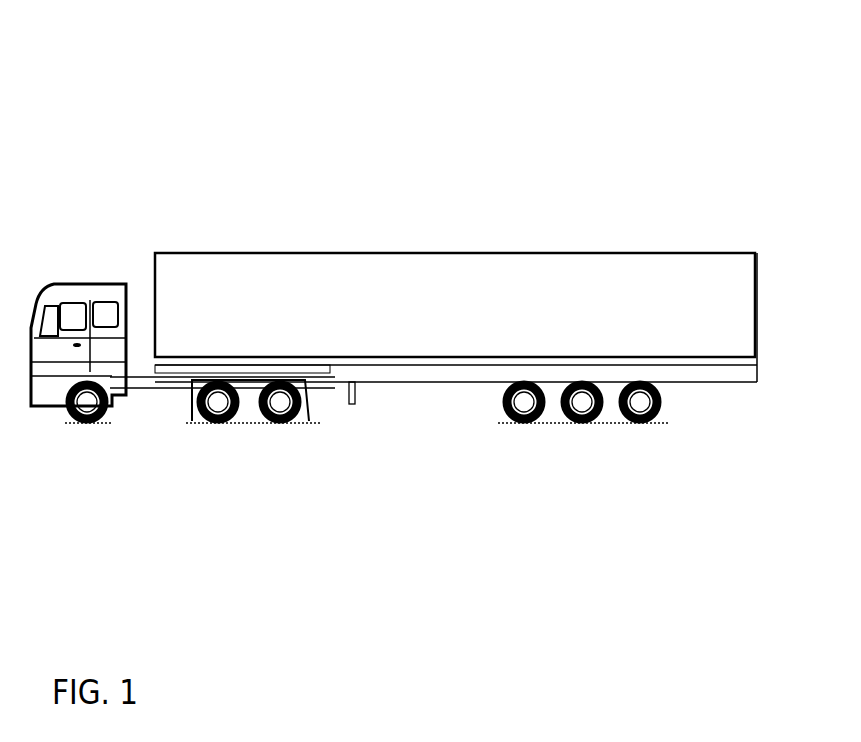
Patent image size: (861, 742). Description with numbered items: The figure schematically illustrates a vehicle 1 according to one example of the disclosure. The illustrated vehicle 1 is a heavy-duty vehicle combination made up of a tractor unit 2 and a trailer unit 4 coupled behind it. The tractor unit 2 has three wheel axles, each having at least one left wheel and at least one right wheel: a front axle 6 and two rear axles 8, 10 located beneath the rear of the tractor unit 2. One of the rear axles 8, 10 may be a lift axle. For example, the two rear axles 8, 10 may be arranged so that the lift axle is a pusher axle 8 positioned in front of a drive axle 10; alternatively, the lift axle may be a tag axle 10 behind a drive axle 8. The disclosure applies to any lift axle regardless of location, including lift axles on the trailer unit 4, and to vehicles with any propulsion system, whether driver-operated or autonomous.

The vehicle 1 is at (127, 60).
The tractor unit 2 is at (60, 287).
The trailer unit 4 is at (428, 253).
The front axle 6 is at (86, 402).
The rear axle 8 is at (218, 402).
The rear axle 10 is at (280, 402).